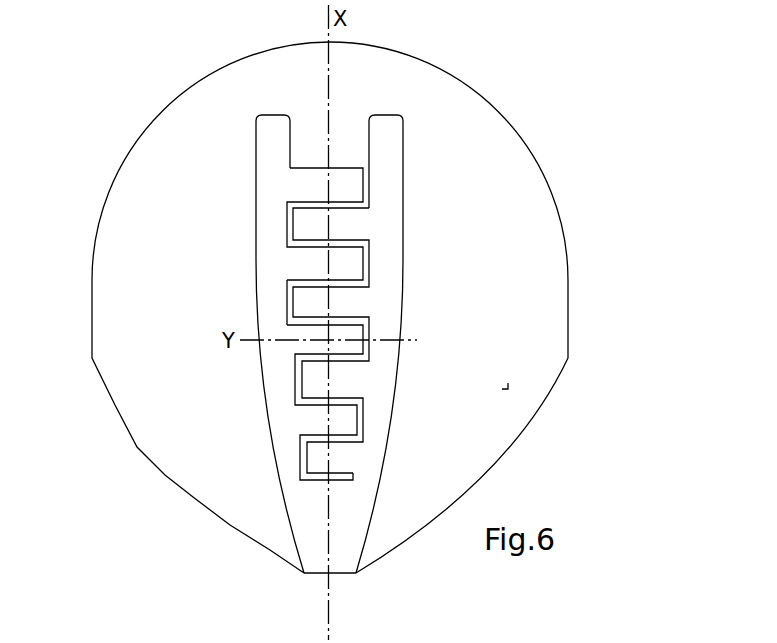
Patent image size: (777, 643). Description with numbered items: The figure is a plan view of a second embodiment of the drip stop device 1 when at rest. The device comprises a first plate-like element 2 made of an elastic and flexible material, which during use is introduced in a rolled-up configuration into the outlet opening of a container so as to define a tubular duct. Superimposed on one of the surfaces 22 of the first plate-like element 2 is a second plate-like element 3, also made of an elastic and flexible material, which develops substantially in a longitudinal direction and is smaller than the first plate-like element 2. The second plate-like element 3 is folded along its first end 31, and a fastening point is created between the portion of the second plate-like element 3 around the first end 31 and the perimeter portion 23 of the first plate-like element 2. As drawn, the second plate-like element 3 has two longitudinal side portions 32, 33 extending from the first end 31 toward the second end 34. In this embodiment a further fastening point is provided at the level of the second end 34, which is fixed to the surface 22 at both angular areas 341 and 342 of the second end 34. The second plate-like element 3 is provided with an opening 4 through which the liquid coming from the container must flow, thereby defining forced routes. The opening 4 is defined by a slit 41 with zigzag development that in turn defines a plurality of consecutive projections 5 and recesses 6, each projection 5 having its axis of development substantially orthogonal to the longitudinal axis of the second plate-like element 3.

The drip stop device 1 is at (614, 112).
The first plate-like element 2 is at (541, 297).
The surface 22 is at (508, 389).
The perimeter portion 23 is at (288, 553).
The second plate-like element 3 is at (263, 168).
The first end 31 is at (322, 568).
The left tine 32 is at (256, 234).
The right tine 33 is at (401, 214).
The second end 34 is at (273, 102).
The angular area 341 is at (263, 123).
The angular area 342 is at (395, 122).
The opening 4 is at (378, 194).
The slit 41 is at (292, 300).
The projection 5 is at (343, 347).
The recess 6 is at (283, 380).